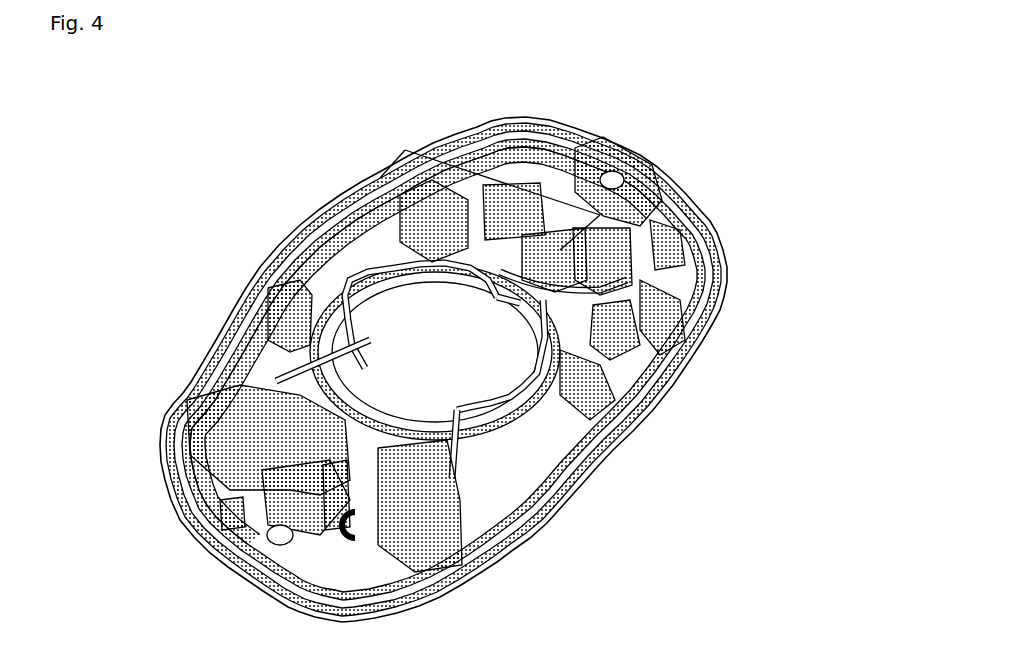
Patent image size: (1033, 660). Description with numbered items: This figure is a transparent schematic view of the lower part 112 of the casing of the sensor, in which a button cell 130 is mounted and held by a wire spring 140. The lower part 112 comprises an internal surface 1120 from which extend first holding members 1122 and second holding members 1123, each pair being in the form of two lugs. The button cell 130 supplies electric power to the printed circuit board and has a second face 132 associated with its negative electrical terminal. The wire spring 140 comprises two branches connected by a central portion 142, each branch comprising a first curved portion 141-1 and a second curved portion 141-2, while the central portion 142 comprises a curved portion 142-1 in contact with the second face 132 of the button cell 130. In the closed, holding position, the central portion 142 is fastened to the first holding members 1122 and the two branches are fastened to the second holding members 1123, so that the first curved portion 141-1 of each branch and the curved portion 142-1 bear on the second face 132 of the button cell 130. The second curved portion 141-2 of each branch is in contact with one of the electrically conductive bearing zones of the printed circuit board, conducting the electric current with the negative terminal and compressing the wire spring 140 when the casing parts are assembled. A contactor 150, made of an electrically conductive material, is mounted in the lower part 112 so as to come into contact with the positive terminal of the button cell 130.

The lower part of the casing 112 is at (383, 178).
The internal surface 1120 is at (500, 497).
The first holding members 1122 is at (460, 182).
The second holding members 1123 is at (257, 392).
The button cell 130 is at (500, 333).
The second face 132 is at (443, 356).
The wire spring 140 is at (281, 371).
The first curved portion 141-1 is at (462, 408).
The second curved portion 141-2 is at (350, 290).
The central portion 142 is at (497, 297).
The curved portion 142-1 is at (655, 222).
The contactor 150 is at (337, 447).